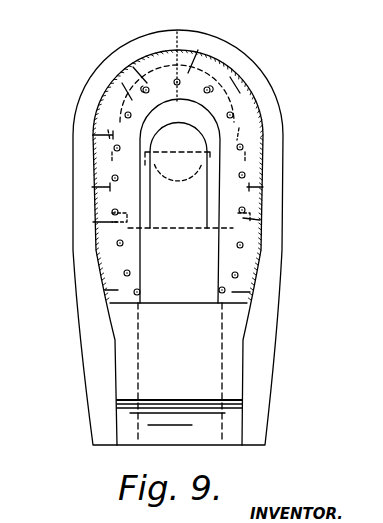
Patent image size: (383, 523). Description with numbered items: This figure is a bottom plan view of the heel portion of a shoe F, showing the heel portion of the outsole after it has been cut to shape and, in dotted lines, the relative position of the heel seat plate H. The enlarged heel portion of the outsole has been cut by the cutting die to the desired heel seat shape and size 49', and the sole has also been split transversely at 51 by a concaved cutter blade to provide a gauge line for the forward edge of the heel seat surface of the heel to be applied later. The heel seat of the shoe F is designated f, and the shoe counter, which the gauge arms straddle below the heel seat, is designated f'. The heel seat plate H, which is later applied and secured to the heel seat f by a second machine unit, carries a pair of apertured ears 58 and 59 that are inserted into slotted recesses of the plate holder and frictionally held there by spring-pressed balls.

The shoe F is at (267, 437).
The heel seat f is at (197, 247).
The shoe counter f' is at (198, 171).
The apertured ear 59 is at (138, 170).
The cut heel portion of outsole 49' is at (180, 201).
The transverse split 51 is at (177, 304).
The heel seat plate H is at (110, 204).
The apertured ear 58 is at (104, 254).